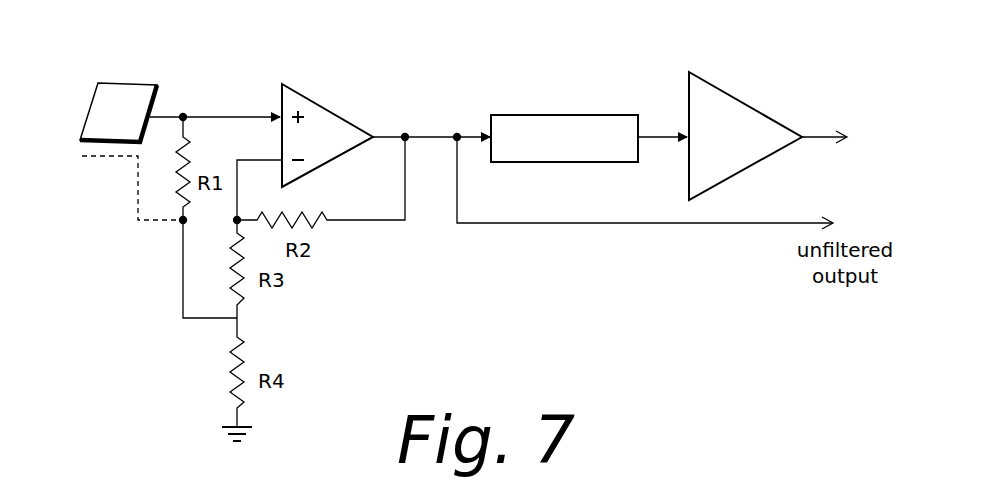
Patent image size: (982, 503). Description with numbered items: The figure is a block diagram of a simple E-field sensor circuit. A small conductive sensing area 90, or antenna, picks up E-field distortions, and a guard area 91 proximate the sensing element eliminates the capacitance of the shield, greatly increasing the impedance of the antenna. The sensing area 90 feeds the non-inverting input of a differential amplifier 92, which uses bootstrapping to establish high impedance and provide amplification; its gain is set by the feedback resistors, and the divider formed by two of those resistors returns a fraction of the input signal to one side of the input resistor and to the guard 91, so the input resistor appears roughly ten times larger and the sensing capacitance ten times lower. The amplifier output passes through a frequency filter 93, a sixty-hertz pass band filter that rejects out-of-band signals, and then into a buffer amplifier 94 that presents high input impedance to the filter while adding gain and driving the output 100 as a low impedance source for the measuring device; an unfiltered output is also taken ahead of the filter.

The sensing area 90 is at (118, 83).
The guard area 91 is at (115, 156).
The differential amplifier 92 is at (327, 107).
The frequency filter 93 is at (568, 115).
The buffer amplifier 94 is at (720, 88).
The output 100 is at (820, 132).